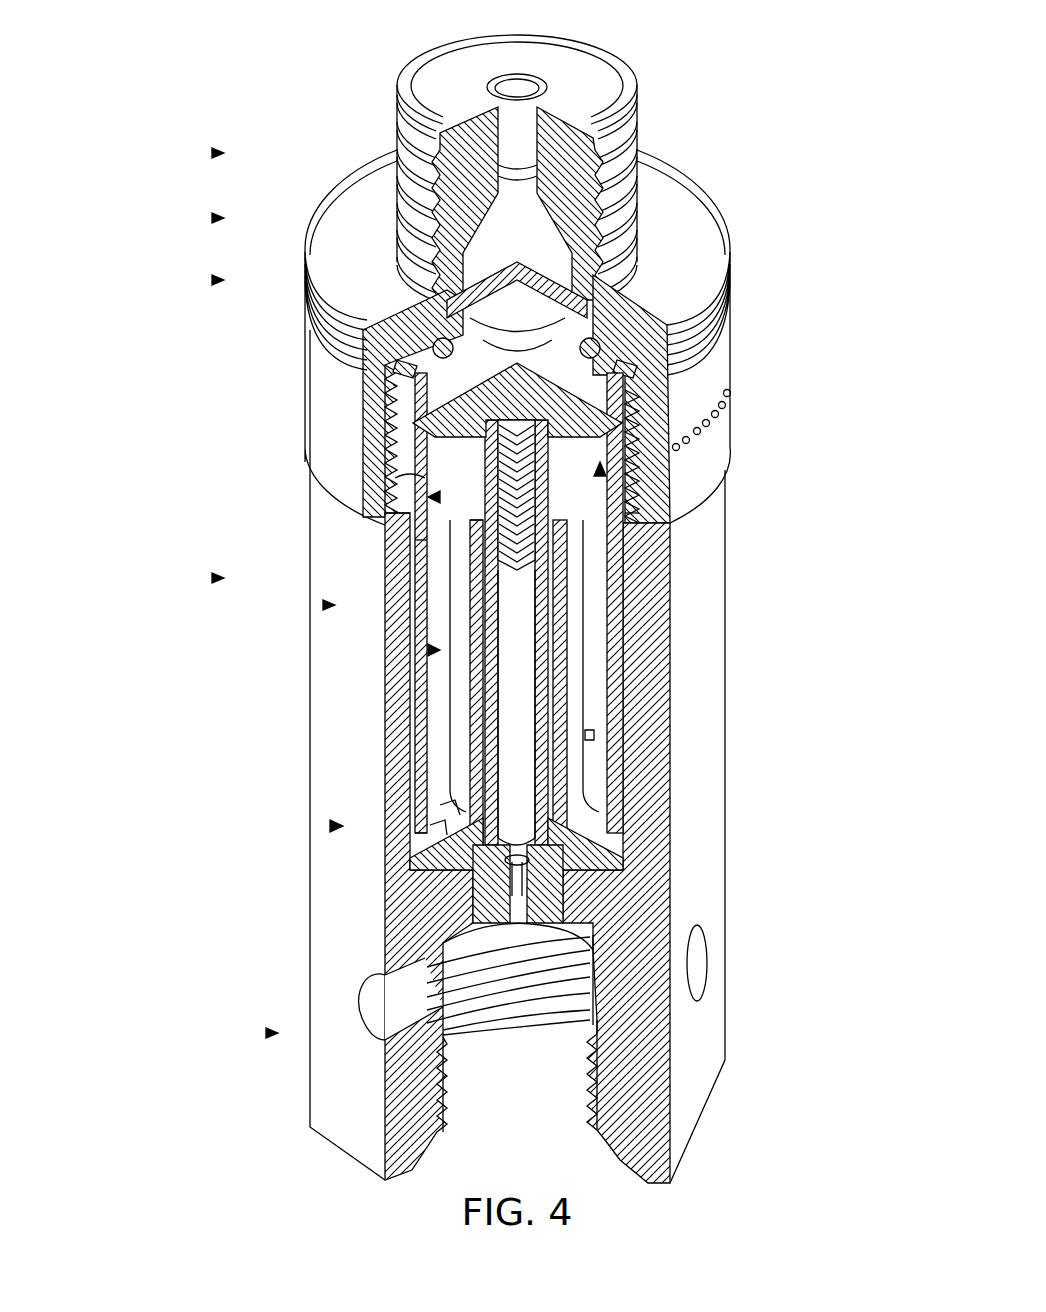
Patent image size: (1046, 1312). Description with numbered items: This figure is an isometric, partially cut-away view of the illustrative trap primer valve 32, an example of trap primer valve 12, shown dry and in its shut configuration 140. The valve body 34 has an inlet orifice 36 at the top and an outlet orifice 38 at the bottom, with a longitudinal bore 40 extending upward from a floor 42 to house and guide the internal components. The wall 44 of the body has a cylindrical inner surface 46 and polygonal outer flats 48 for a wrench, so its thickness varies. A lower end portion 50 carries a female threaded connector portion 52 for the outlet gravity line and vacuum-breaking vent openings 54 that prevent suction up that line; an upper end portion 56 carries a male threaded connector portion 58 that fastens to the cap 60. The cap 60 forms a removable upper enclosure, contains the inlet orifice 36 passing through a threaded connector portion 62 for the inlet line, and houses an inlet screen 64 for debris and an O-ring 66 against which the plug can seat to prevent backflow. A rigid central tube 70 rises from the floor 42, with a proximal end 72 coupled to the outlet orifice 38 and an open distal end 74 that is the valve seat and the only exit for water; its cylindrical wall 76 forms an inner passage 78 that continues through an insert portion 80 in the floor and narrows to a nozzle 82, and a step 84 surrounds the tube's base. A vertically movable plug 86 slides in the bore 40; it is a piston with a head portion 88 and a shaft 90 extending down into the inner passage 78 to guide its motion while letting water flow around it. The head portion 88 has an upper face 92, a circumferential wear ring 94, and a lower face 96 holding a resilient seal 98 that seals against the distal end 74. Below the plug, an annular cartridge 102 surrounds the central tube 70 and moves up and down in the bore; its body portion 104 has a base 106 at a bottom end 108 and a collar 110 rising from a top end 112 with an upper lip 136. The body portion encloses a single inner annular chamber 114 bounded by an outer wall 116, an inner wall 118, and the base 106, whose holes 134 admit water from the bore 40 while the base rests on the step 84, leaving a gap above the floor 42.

The trap primer valve 12 is at (213, 218).
The trap primer valve 32 is at (213, 153).
The valve body 34 is at (213, 578).
The inlet orifice 36 is at (510, 76).
The outlet orifice 38 is at (517, 897).
The longitudinal bore 40 is at (417, 480).
The floor 42 is at (437, 833).
The wall 44 is at (440, 497).
The inner surface 46 is at (448, 508).
The outer flats 48 is at (343, 613).
The lower end portion 50 is at (267, 1033).
The threaded connector portion 52 is at (445, 1110).
The vacuum-breaking vent openings 54 is at (372, 1005).
The upper end portion 56 is at (385, 400).
The threaded connector portion 58 is at (378, 437).
The cap 60 is at (583, 68).
The threaded connector portion 62 is at (640, 150).
The inlet screen 64 is at (553, 262).
The O-ring 66 is at (605, 337).
The central tube 70 is at (587, 600).
The proximal end 72 is at (592, 735).
The distal end 74 is at (633, 590).
The cylindrical wall 76 is at (543, 623).
The inner passage 78 is at (505, 712).
The insert portion 80 is at (545, 875).
The nozzle 82 is at (545, 906).
The step 84 is at (583, 797).
The plug 86 is at (627, 447).
The head portion 88 is at (560, 407).
The shaft 90 is at (557, 625).
The upper face 92 is at (490, 340).
The circumferential wear ring 94 is at (553, 355).
The lower face 96 is at (630, 513).
The resilient seal 98 is at (597, 563).
The annular cartridge 102 is at (417, 616).
The body portion 104 is at (428, 650).
The base 106 is at (455, 813).
The bottom end 108 is at (330, 826).
The collar 110 is at (390, 580).
The top end 112 is at (323, 605).
The inner annular chamber 114 is at (420, 677).
The outer wall 116 is at (467, 685).
The inner wall 118 is at (447, 713).
The holes 134 is at (443, 795).
The upper lip 136 is at (477, 432).
The first configuration 140 is at (213, 280).